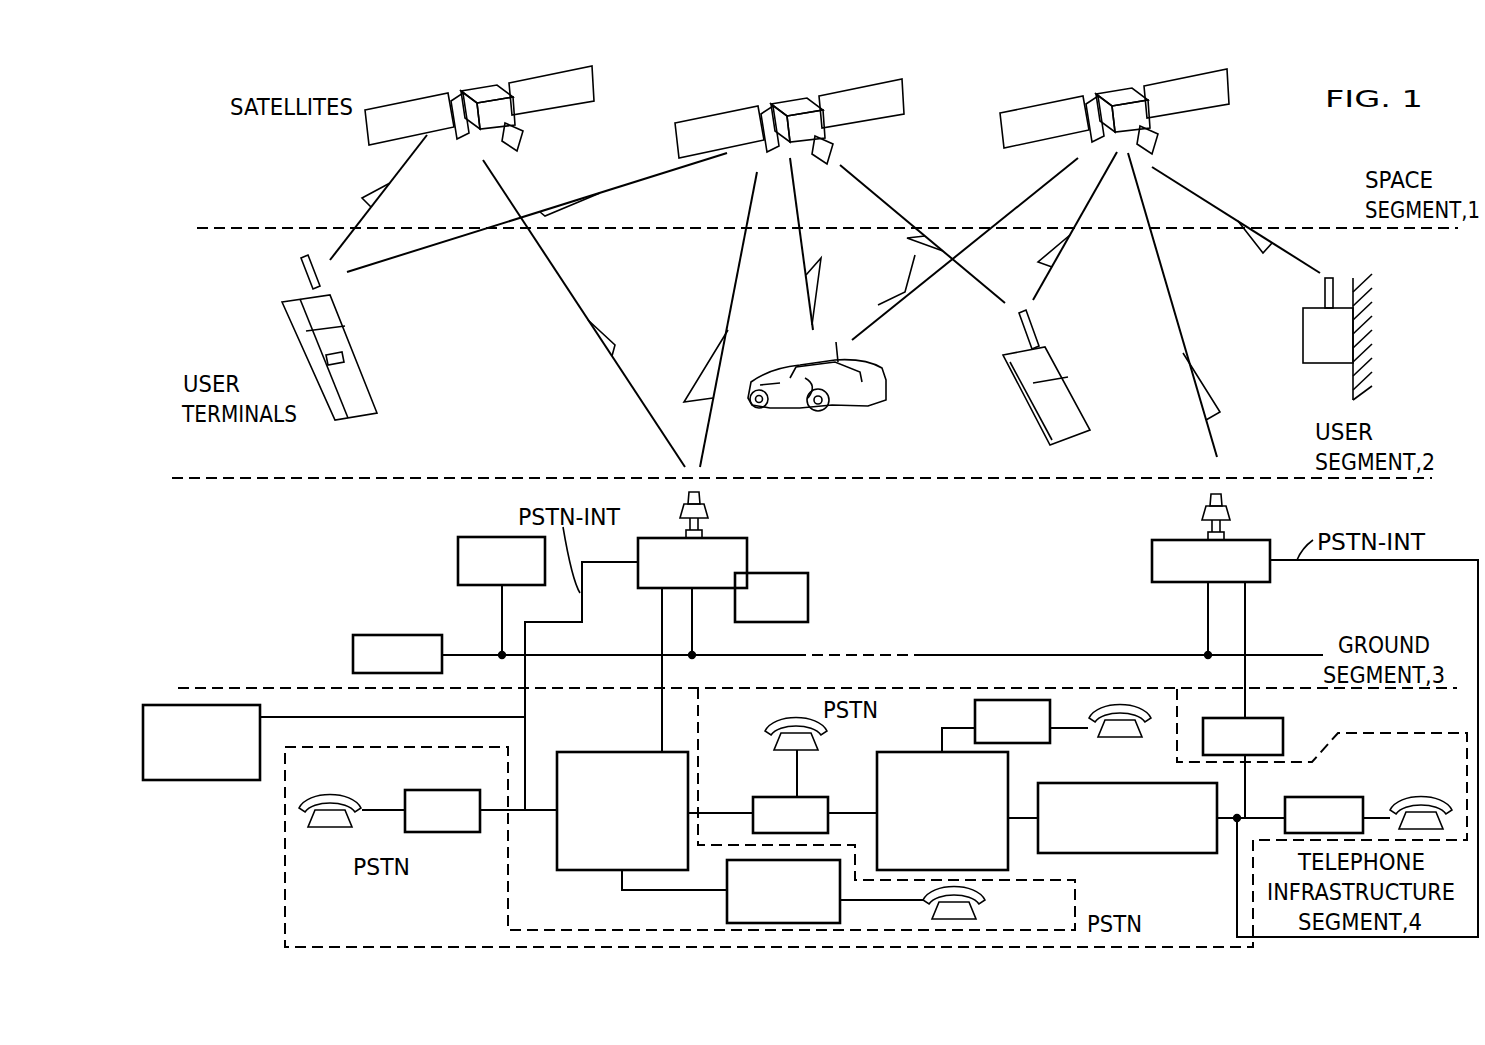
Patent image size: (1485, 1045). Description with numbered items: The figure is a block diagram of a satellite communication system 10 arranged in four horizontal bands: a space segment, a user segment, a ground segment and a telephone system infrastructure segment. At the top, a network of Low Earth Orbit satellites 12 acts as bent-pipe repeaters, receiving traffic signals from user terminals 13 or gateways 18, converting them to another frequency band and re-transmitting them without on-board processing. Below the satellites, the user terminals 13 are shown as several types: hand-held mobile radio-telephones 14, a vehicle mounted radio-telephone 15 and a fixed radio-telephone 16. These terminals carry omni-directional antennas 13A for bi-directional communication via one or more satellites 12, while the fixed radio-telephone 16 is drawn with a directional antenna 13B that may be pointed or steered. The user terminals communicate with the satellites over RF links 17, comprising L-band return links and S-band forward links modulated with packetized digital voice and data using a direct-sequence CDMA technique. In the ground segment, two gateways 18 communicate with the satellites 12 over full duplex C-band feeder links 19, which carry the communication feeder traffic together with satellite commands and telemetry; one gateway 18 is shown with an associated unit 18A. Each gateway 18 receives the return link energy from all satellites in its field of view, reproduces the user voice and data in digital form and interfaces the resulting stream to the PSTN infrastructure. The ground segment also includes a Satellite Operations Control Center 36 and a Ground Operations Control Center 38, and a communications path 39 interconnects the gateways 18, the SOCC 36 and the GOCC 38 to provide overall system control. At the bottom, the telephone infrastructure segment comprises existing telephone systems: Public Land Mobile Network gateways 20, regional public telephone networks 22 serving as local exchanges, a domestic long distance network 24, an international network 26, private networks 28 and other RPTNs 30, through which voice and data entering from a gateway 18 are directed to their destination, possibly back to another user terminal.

The satellite communication system 10 is at (1300, 206).
The satellites 12 is at (513, 147).
The user terminals 13 is at (308, 438).
The omni-directional antennas 13A is at (298, 270).
The directional antennas 13B is at (1323, 290).
The hand-held mobile radio-telephones 14 is at (373, 422).
The vehicle mounted radio-telephones 15 is at (857, 365).
The fixed radio-telephones 16 is at (1302, 335).
The RF links 17 is at (380, 182).
The gateways 18 is at (748, 552).
The telemetry and control unit 18A is at (787, 573).
The C band RF link 19 is at (543, 263).
The Public Land Mobile Network gateways 20 is at (608, 752).
The regional public telephone networks 22 is at (422, 790).
The domestic long distance networks 24 is at (932, 752).
The international networks 26 is at (1135, 853).
The private networks 28 is at (212, 782).
The other RPTNs 30 is at (1325, 797).
The Satellite Operations Control Center 36 is at (458, 557).
The Ground Operations Control Center 38 is at (353, 643).
The communications path 39 is at (957, 653).